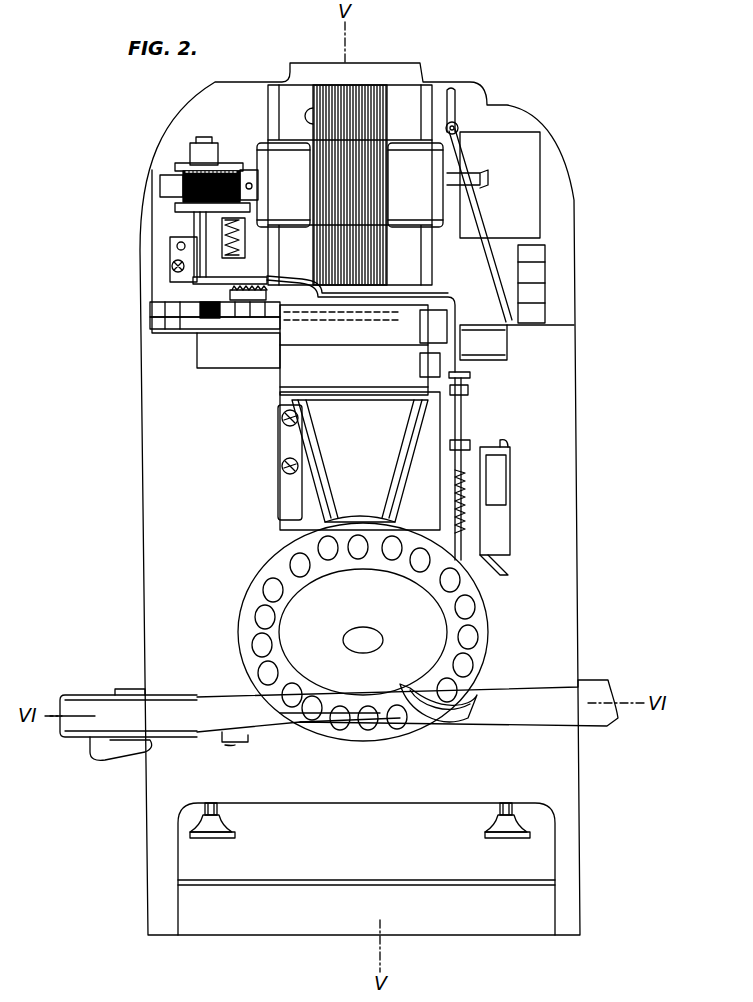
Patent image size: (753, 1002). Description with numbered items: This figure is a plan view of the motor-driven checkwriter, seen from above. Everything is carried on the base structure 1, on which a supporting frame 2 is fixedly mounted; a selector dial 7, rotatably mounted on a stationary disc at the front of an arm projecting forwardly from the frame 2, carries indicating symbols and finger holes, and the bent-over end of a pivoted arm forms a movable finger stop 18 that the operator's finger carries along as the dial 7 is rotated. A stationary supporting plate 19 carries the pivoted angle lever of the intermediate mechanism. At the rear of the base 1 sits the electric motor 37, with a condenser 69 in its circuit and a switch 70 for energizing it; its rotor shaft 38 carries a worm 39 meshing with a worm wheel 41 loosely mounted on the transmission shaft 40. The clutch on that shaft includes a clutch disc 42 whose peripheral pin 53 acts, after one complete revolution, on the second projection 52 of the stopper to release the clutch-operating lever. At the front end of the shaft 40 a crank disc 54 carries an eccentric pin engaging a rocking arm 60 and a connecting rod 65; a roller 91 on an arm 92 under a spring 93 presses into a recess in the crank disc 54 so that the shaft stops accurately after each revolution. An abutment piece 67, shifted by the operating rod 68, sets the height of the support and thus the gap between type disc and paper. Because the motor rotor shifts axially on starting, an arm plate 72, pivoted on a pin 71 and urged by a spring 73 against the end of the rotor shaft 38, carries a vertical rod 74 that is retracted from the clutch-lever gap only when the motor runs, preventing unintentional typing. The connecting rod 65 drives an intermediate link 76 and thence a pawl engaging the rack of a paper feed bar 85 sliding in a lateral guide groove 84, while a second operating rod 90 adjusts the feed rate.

The base structure 1 is at (158, 500).
The supporting frame 2 is at (310, 483).
The selector dial 7 is at (396, 740).
The movable finger stop 18 is at (462, 712).
The stationary supporting plate 19 is at (462, 482).
The electric motor 37 is at (415, 100).
The rotor shaft 38 is at (257, 178).
The worm 39 is at (160, 188).
The transmission shaft 40 is at (200, 143).
The worm wheel 41 is at (176, 170).
The clutch disc 42 is at (178, 208).
The second projection 52 is at (172, 262).
The pin 53 is at (205, 218).
The crank disc 54 is at (155, 310).
The rocking arm 60 is at (155, 325).
The connecting rod 65 is at (163, 337).
The abutment piece 67 is at (535, 272).
The operating rod 68 is at (218, 810).
The condenser 69 is at (285, 376).
The switch 70 is at (492, 490).
The pin 71 is at (458, 126).
The arm plate 72 is at (473, 165).
The spring 73 is at (457, 107).
The vertical rod 74 is at (490, 362).
The intermediate link 76 is at (453, 296).
The lateral guide groove 84 is at (540, 690).
The paper feed bar 85 is at (236, 738).
The operating rod 90 is at (514, 806).
The roller 91 is at (205, 312).
The arm 92 is at (195, 296).
The spring 93 is at (240, 300).